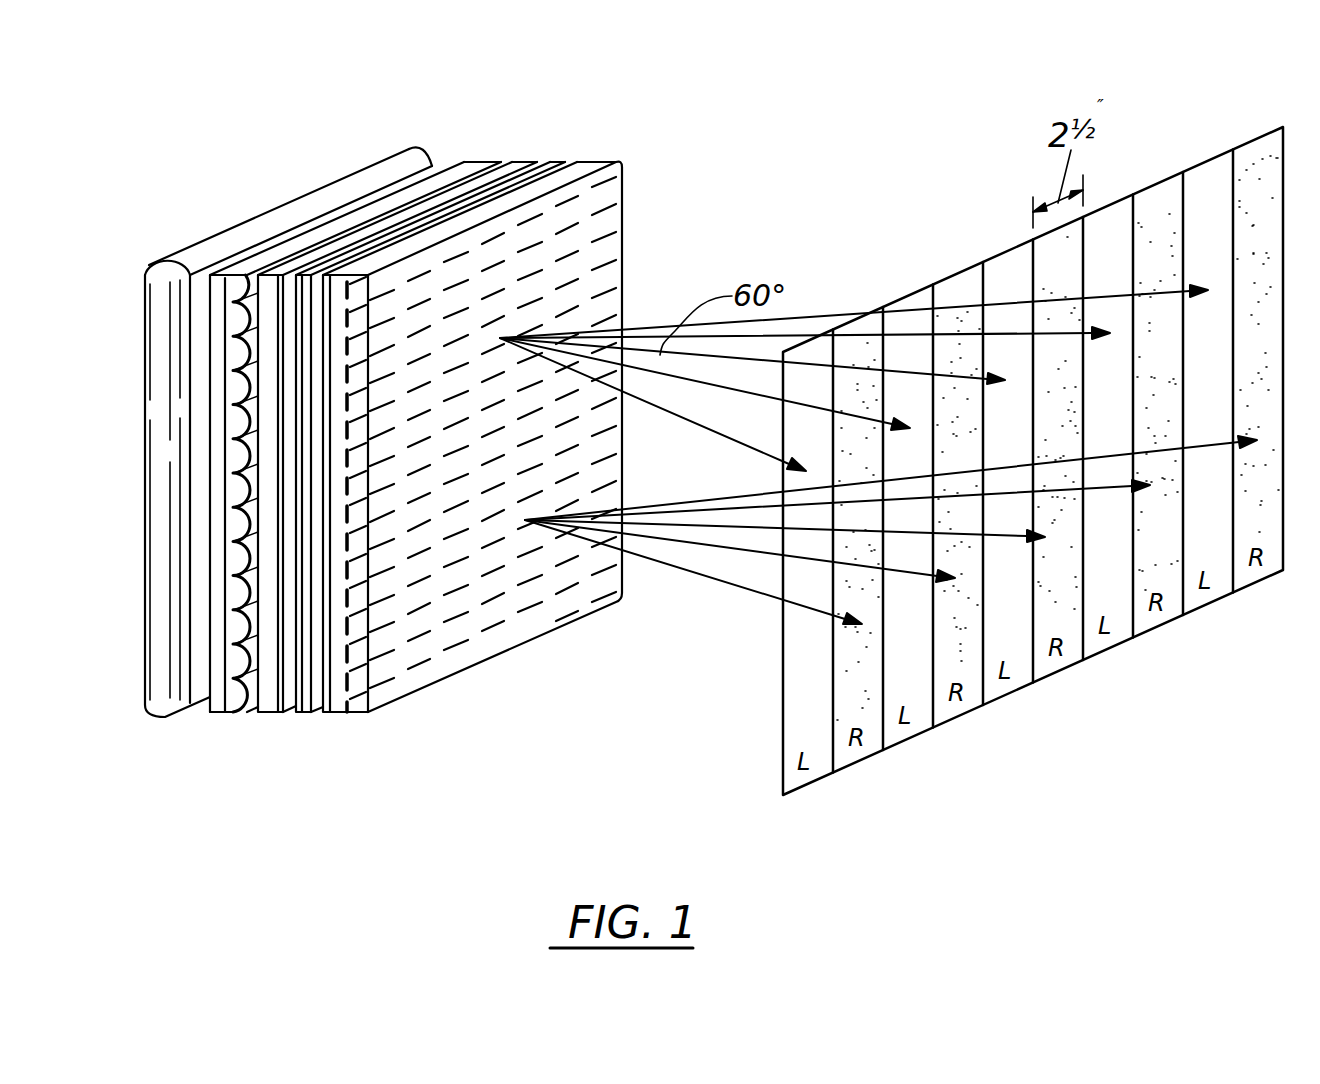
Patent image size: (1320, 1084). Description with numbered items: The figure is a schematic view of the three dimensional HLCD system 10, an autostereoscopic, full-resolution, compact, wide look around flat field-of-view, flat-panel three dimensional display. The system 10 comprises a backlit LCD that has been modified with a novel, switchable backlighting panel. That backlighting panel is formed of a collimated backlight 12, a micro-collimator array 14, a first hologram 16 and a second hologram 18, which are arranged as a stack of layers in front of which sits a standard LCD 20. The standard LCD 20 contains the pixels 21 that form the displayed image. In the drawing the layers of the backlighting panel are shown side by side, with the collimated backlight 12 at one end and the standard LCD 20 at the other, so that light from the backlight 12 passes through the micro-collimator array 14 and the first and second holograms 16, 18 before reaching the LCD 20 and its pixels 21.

The system 10 is at (338, 737).
The collimated backlight 12 is at (218, 240).
The micro-collimator array 14 is at (468, 162).
The first hologram 16 is at (518, 162).
The second hologram 18 is at (567, 162).
The standard LCD 20 is at (597, 165).
The pixels 21 is at (617, 149).